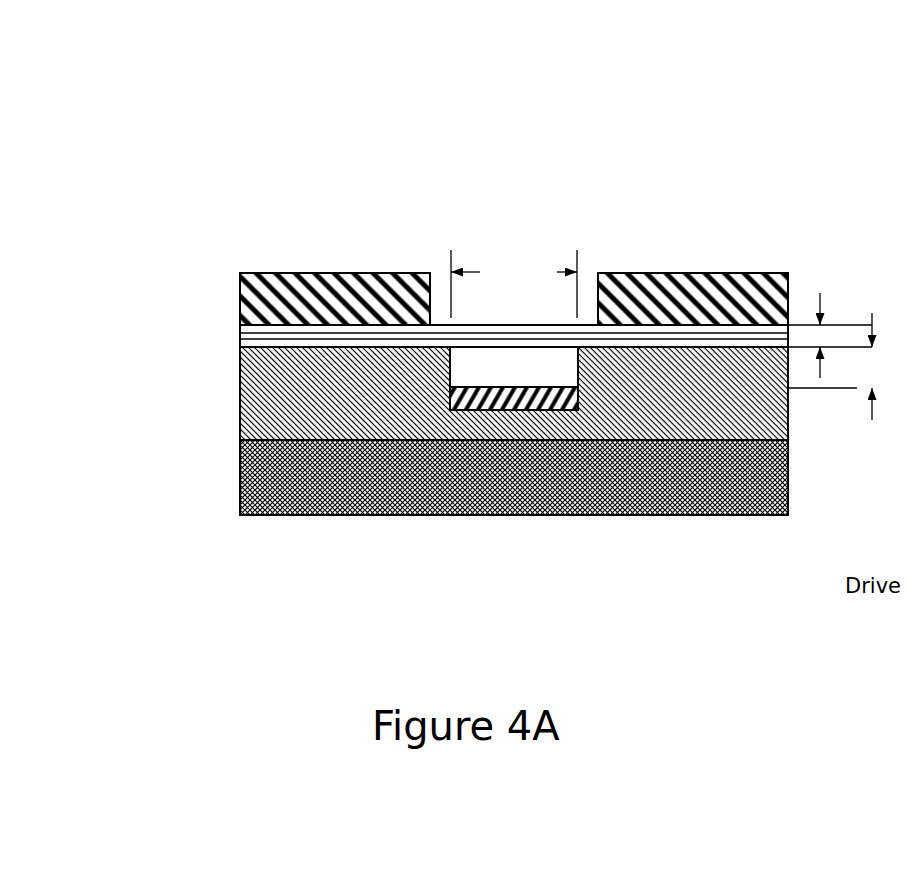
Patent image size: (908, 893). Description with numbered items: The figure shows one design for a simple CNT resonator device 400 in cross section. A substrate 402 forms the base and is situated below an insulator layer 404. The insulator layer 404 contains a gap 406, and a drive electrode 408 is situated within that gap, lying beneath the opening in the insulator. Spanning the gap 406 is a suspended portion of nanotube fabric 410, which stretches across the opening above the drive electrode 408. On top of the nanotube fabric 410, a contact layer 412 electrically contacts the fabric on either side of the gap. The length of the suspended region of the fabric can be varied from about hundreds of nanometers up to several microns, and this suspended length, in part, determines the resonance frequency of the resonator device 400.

The CNT resonator device 400 is at (511, 330).
The substrate 402 is at (222, 487).
The insulator layer 404 is at (222, 423).
The gap 406 is at (473, 360).
The drive electrode 408 is at (567, 418).
The nanotube fabric 410 is at (582, 328).
The contact layer 412 is at (348, 270).